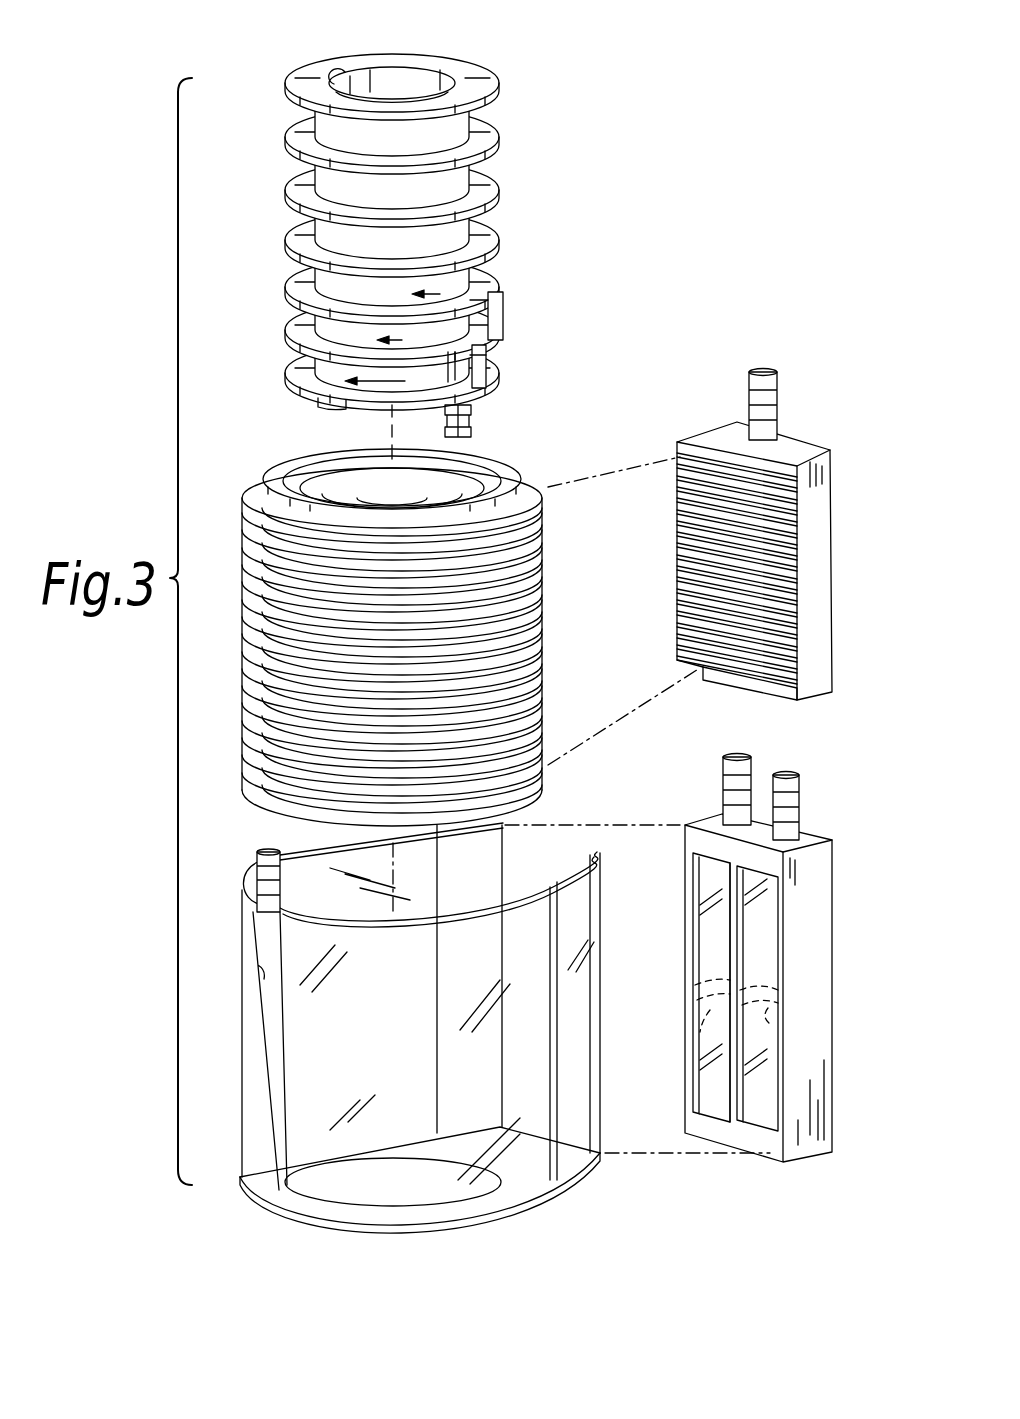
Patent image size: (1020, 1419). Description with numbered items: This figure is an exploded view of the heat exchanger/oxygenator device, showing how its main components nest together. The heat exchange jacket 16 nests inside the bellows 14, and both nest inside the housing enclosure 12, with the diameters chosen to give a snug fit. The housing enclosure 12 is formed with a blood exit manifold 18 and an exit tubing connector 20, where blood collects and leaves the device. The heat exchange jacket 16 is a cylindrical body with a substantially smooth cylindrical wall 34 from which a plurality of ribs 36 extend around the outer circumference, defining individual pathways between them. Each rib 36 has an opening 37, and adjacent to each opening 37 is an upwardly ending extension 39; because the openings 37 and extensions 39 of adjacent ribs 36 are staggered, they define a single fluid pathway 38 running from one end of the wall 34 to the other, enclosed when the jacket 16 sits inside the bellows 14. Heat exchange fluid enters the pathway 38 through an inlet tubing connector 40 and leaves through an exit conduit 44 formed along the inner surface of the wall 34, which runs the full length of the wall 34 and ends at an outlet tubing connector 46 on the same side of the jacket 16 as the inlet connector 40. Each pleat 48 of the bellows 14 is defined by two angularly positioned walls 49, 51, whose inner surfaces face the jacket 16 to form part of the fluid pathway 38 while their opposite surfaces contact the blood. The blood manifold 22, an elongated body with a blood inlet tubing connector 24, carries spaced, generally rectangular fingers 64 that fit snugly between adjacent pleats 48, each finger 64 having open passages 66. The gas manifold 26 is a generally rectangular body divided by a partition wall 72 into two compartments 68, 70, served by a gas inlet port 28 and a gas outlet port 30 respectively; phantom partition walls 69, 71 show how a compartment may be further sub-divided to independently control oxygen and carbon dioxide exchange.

The housing enclosure 12 is at (268, 1200).
The bellows 14 is at (550, 480).
The heat exchange jacket 16 is at (500, 77).
The blood exit manifold 18 is at (262, 975).
The exit tubing connector 20 is at (257, 854).
The blood manifold 22 is at (778, 698).
The blood inlet tubing connector 24 is at (757, 370).
The gas manifold 26 is at (784, 1160).
The gas inlet port 28 is at (722, 777).
The gas outlet port 30 is at (796, 785).
The cylindrical wall 34 is at (418, 74).
The rib 36 is at (298, 149).
The opening 37 is at (495, 288).
The fluid pathway 38 is at (485, 222).
The extension 39 is at (492, 290).
The inlet tubing connector 40 is at (470, 420).
The exit conduit 44 is at (330, 82).
The outlet tubing connector 46 is at (328, 413).
The pleat 48 is at (545, 552).
The wall 49 is at (544, 602).
The wall 51 is at (546, 645).
The finger 64 is at (772, 470).
The open passage 66 is at (713, 453).
The compartment 68 is at (700, 893).
The partition wall 69 is at (697, 1027).
The compartment 70 is at (785, 915).
The partition wall 71 is at (782, 1026).
The partition wall 72 is at (735, 927).